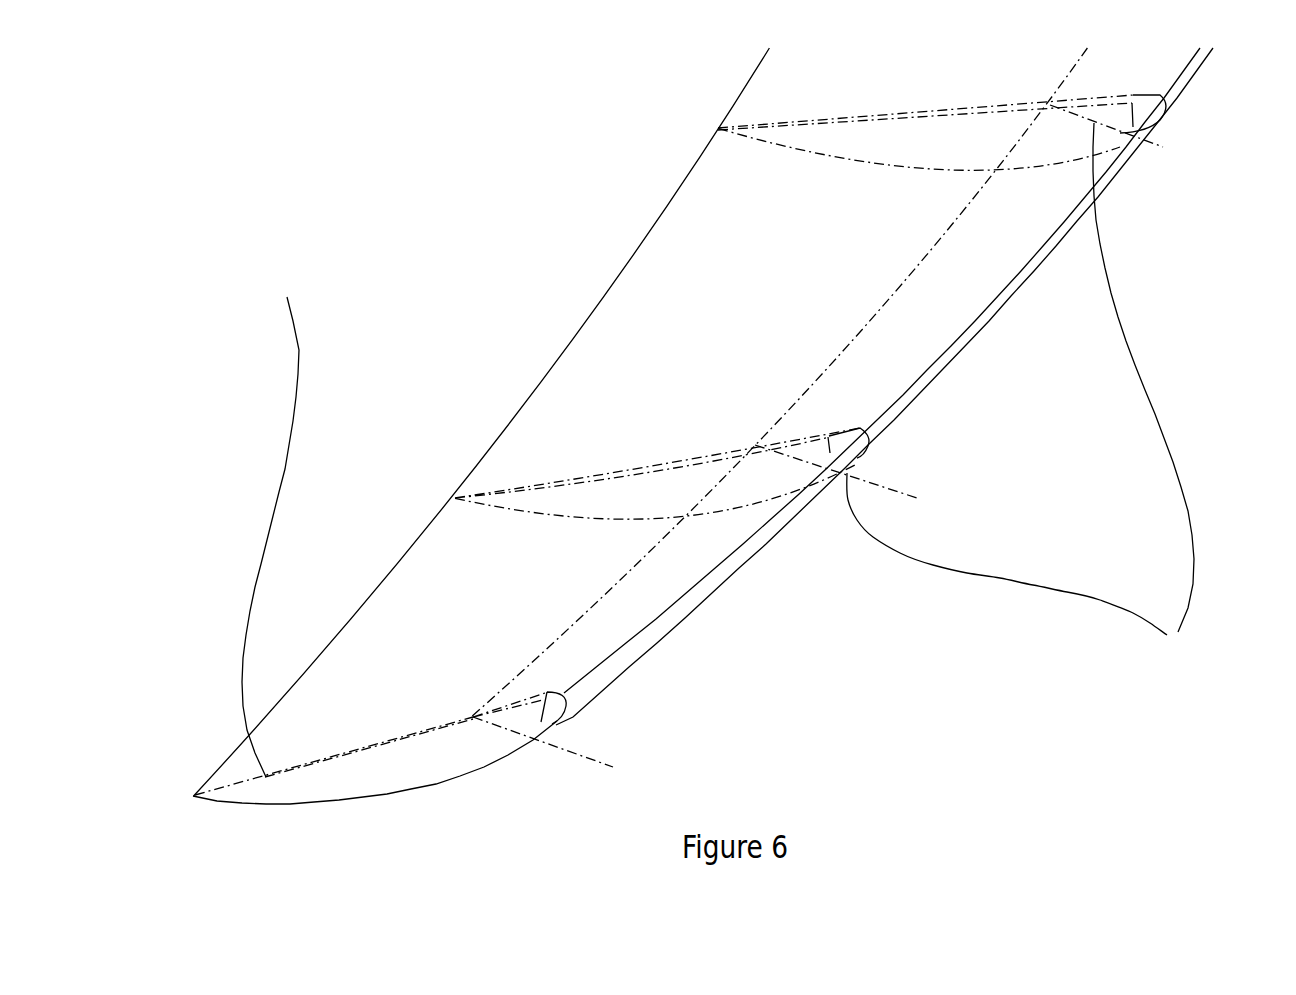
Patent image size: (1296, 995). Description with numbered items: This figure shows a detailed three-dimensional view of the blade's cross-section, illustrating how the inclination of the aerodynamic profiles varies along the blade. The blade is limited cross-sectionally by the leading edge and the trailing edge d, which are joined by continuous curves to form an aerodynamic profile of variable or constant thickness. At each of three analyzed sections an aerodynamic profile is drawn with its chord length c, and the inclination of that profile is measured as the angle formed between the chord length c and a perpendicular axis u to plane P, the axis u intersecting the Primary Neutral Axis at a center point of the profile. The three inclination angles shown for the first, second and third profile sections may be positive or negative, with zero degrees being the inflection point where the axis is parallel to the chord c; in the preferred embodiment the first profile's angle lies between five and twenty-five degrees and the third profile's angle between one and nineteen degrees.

The trailing edge d is at (760, 64).
The chord length c is at (858, 428).
The perpendicular axis u is at (587, 755).